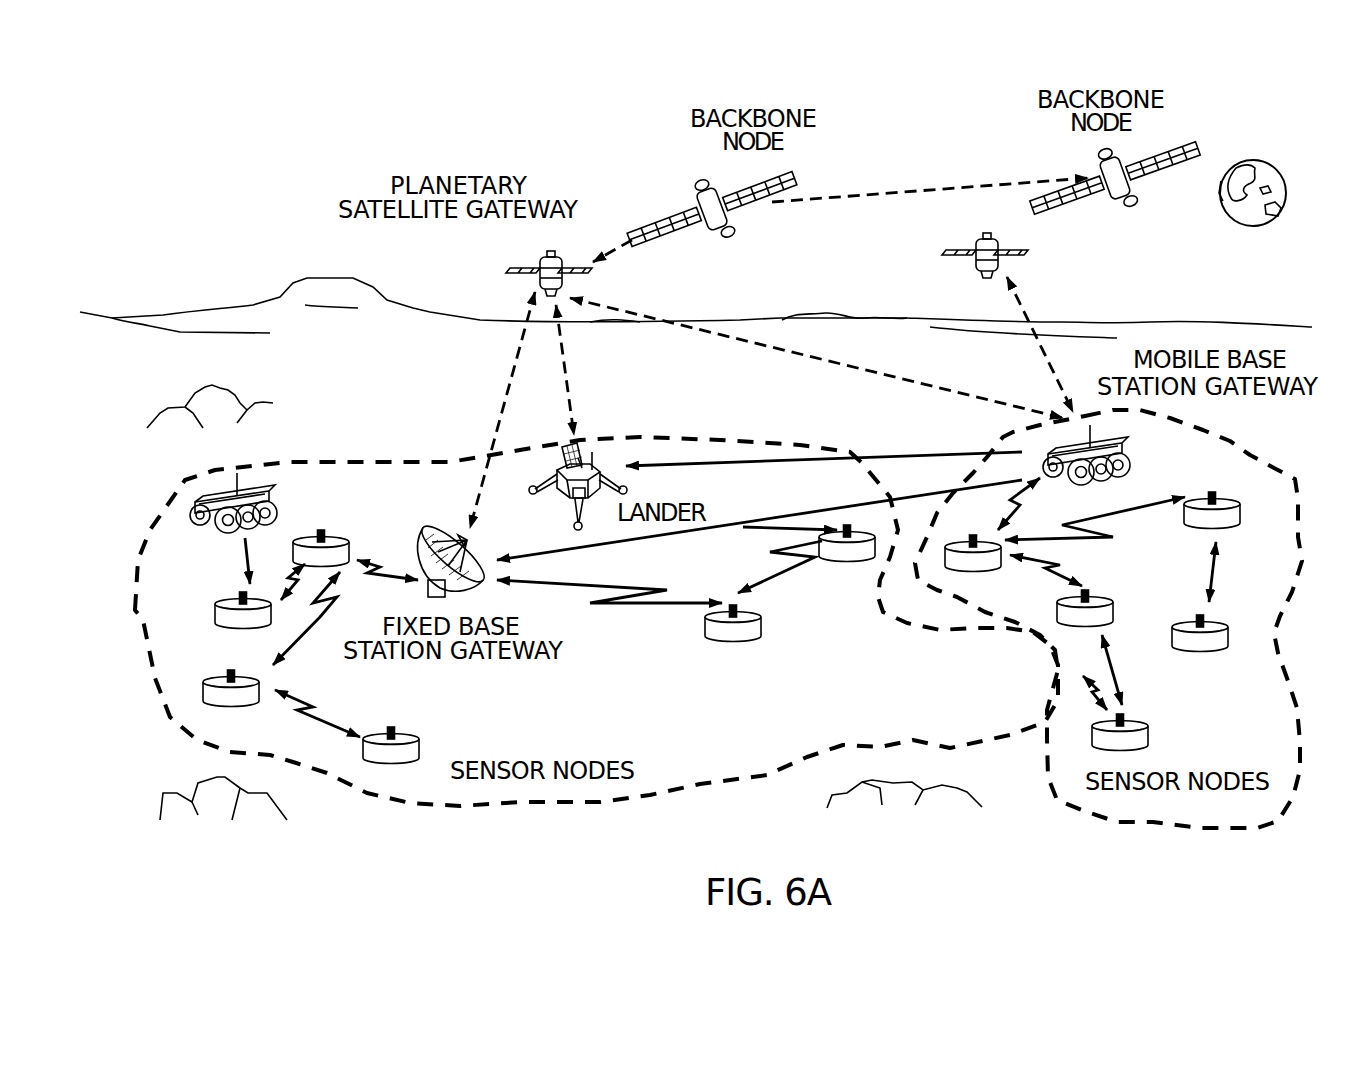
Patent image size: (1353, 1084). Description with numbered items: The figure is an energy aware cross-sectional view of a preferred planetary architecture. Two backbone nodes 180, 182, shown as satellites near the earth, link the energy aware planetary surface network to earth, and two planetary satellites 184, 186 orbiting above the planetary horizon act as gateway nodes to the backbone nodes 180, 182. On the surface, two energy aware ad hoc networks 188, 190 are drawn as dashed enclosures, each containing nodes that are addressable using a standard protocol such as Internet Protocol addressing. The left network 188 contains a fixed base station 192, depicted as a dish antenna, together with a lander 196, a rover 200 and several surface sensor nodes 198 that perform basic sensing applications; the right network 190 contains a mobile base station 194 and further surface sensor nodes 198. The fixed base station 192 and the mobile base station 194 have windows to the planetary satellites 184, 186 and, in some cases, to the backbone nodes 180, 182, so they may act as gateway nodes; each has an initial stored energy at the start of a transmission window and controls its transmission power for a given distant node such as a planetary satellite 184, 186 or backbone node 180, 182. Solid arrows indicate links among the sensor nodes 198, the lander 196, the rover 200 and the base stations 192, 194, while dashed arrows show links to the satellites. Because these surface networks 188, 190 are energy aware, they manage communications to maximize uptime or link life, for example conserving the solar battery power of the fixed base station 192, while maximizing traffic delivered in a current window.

The backbone node 180 is at (1170, 172).
The backbone node 182 is at (704, 228).
The planetary satellite 184 is at (532, 270).
The planetary satellite 186 is at (962, 253).
The energy aware ad hoc network 188 is at (407, 805).
The energy aware ad hoc network 190 is at (1227, 832).
The fixed base station 192 is at (440, 527).
The mobile base station 194 is at (1120, 443).
The lander 196 is at (588, 462).
The surface sensor node 198 is at (340, 536).
The rover 200 is at (198, 498).